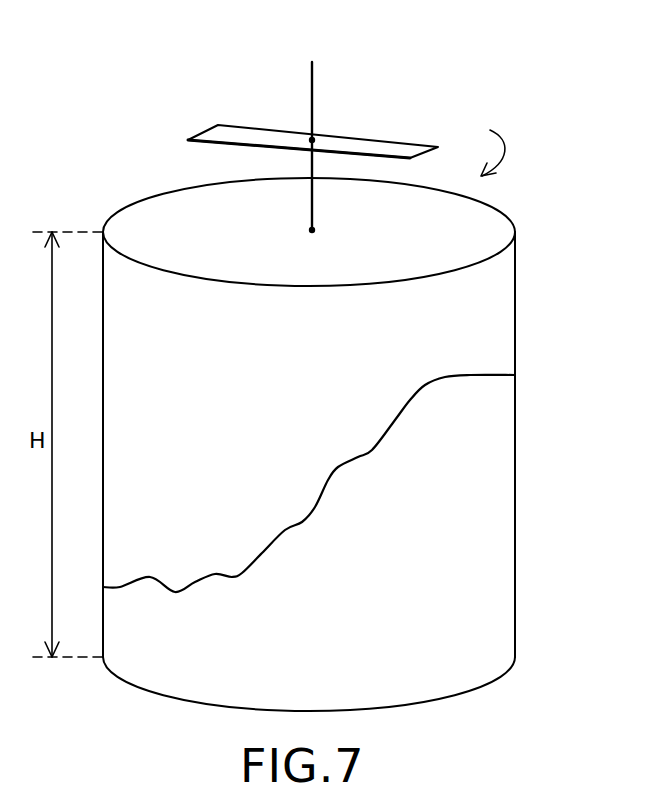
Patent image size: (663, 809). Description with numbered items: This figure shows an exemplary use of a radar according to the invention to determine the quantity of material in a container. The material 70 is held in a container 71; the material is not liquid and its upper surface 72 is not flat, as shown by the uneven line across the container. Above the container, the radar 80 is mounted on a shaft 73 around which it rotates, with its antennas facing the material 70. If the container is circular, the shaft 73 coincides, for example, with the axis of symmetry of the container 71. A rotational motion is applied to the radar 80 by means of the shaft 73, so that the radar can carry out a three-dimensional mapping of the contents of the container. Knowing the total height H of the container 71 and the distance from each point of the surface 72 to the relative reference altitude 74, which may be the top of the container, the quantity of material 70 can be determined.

The material 70 is at (485, 513).
The container 71 is at (515, 315).
The upper surface 72 is at (333, 474).
The shaft 73 is at (312, 87).
The relative reference altitude 74 is at (485, 228).
The radar 80 is at (188, 140).